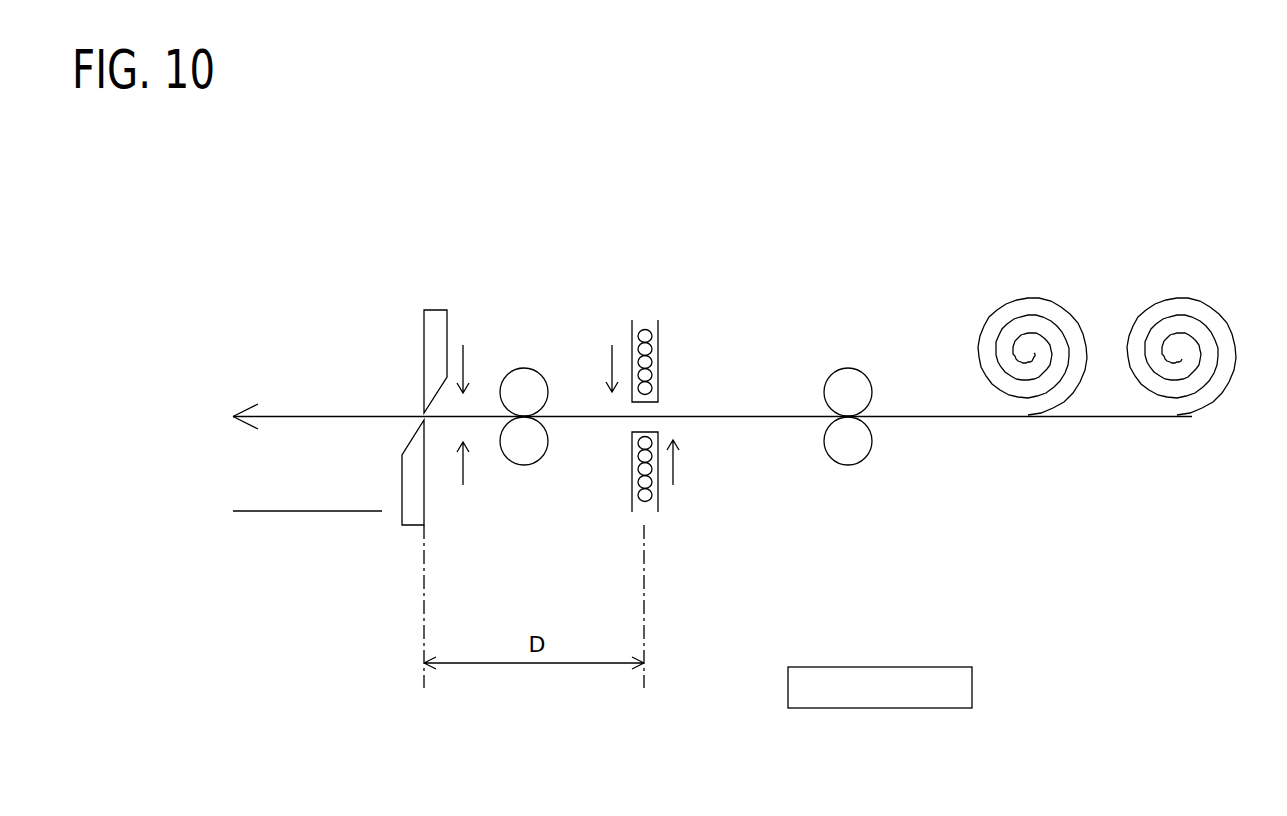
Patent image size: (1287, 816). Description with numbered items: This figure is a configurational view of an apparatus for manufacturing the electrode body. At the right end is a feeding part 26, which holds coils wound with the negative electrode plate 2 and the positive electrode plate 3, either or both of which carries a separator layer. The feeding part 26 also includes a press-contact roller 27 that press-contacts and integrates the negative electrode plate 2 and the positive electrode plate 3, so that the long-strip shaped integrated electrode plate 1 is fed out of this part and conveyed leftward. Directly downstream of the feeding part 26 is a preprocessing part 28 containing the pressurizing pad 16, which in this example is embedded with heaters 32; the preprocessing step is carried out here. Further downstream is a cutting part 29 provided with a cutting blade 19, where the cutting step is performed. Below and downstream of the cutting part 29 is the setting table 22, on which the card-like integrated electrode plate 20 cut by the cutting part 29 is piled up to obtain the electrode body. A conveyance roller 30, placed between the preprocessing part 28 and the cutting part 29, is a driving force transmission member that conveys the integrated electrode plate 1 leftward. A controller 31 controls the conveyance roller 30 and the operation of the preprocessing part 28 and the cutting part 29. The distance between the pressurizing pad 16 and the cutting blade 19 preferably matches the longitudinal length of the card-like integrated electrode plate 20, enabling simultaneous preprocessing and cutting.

The integrated electrode plate 1 is at (753, 418).
The negative electrode plate 2 is at (1192, 289).
The positive electrode plate 3 is at (1036, 289).
The pressurizing pad 16 is at (658, 352).
The cutting blade 19 is at (424, 367).
The card-like integrated electrode plate 20 is at (256, 511).
The setting table 22 is at (304, 547).
The feeding part 26 is at (809, 509).
The press-contact roller 27 is at (853, 380).
The preprocessing part 28 is at (725, 266).
The cutting part 29 is at (458, 276).
The conveyance roller 30 is at (529, 378).
The controller 31 is at (974, 688).
The heaters 32 is at (658, 373).